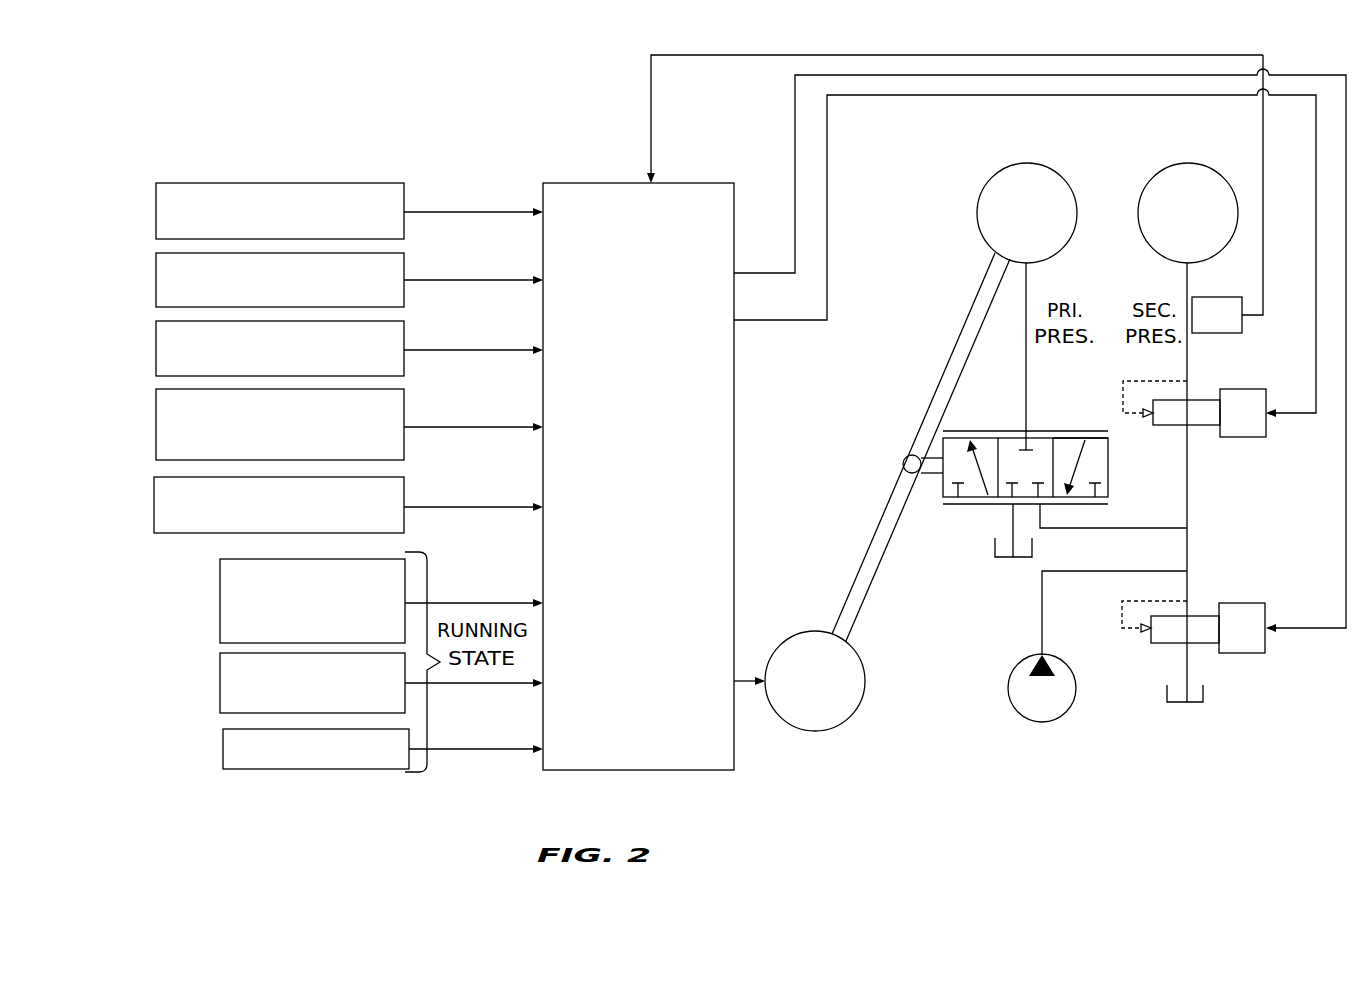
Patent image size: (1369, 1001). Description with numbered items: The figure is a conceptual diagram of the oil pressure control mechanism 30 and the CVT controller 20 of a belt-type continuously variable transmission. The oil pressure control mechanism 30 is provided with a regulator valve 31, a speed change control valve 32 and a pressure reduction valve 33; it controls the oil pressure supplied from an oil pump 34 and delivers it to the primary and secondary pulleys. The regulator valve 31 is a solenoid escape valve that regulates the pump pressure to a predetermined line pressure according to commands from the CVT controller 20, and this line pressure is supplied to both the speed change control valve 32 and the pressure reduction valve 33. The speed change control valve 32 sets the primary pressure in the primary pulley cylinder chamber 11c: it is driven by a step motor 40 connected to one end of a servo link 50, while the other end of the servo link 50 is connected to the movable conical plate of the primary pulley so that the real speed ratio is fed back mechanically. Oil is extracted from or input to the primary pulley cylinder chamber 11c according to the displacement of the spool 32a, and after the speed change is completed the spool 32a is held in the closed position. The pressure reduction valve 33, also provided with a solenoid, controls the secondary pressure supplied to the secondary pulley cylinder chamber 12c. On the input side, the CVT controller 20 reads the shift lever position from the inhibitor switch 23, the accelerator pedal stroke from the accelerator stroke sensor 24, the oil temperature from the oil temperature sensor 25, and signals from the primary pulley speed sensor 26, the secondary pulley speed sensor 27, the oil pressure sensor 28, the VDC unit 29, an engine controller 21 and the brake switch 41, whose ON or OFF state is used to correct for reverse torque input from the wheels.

The CVT controller 20 is at (652, 388).
The oil temperature sensor 25 is at (163, 196).
The engine controller 21 is at (160, 280).
The primary pulley speed sensor 26 is at (172, 344).
The secondary pulley speed sensor 27 is at (165, 412).
The vehicle-dynamics-control (VDC) unit 29 is at (175, 507).
The accelerator stroke sensor 24 is at (240, 600).
The inhibitor switch 23 is at (240, 675).
The brake switch 41 is at (232, 742).
The primary pulley cylinder chamber 11c is at (976, 208).
The secondary pulley cylinder chamber 12c is at (1139, 198).
The oil pressure sensor 28 is at (1224, 333).
The servo link 50 is at (880, 517).
The speed change control valve 32 is at (950, 516).
The spool 32a is at (1108, 458).
The oil pressure control mechanism 30 is at (966, 720).
The pressure reduction valve 33 is at (1212, 440).
The regulator valve 31 is at (1213, 660).
The step motor 40 is at (866, 690).
The oil pump 34 is at (1063, 713).